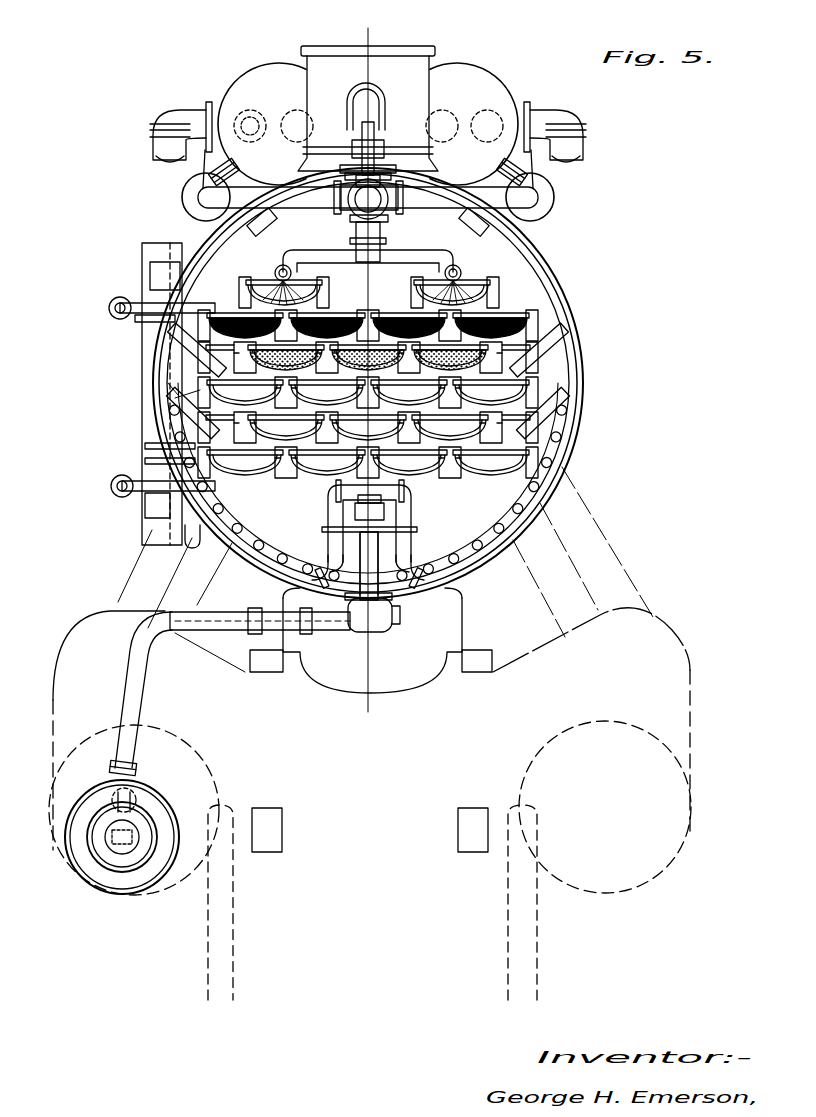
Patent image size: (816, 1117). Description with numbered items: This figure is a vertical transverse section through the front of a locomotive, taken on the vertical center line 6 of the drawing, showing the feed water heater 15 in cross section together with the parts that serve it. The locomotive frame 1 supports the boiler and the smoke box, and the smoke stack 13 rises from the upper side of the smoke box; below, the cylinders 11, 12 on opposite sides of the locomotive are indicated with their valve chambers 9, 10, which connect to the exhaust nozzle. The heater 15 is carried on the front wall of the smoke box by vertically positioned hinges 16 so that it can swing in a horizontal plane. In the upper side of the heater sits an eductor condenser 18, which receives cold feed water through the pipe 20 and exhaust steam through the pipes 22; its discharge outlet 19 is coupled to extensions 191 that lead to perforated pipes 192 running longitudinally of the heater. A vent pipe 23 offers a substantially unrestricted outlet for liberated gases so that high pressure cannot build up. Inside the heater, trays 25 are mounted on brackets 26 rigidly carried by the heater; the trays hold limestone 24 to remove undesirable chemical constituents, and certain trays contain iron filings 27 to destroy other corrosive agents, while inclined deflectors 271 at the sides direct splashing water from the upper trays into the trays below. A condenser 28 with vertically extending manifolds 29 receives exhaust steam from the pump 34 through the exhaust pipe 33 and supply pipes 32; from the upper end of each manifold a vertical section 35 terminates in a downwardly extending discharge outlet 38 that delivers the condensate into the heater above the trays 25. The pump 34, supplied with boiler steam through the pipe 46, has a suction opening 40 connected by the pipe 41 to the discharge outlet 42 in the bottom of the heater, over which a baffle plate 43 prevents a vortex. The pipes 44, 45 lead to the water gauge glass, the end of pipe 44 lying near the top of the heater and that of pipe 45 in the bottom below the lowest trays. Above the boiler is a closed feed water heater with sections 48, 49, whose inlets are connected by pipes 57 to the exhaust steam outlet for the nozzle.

The locomotive frame 1 is at (283, 830).
The section line 6 is at (367, 375).
The valve chamber 9 is at (70, 637).
The valve chamber 10 is at (692, 652).
The cylinder 11 is at (52, 822).
The cylinder 12 is at (690, 822).
The smoke stack 13 is at (430, 80).
The heater 15 is at (536, 247).
The hinges 16 is at (150, 270).
The eductor condenser 18 is at (388, 218).
The discharge outlet 19 is at (368, 242).
The extensions 191 is at (340, 252).
The perforated pipes 192 is at (275, 270).
The pipe 20 is at (368, 118).
The pipes 22 is at (368, 197).
The vent pipe 23 is at (376, 132).
The limestone 24 is at (405, 325).
The trays 25 is at (368, 429).
The brackets 26 is at (548, 345).
The iron filings 27 is at (268, 372).
The inclined deflectors 271 is at (190, 365).
The condenser 28 is at (165, 395).
The manifolds 29 is at (262, 505).
The supply pipes 32 is at (316, 570).
The exhaust pipe 33 is at (362, 560).
The pump 34 is at (138, 826).
The vertical section 35 is at (198, 250).
The discharge outlet 38 is at (368, 227).
The suction opening 40 is at (118, 790).
The pipe 41 is at (130, 741).
The discharge outlet 42 is at (382, 628).
The baffle plate 43 is at (400, 530).
The pipe 44 is at (108, 310).
The pipe 45 is at (110, 488).
The pipe 46 is at (183, 528).
The section 48 is at (261, 124).
The section 49 is at (476, 124).
The pipes 57 is at (170, 150).